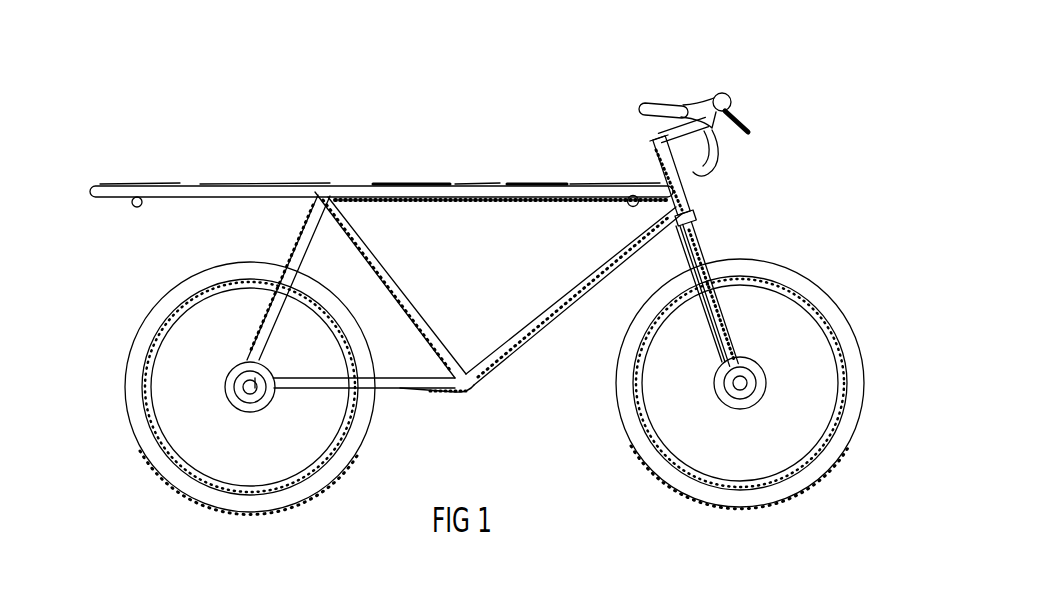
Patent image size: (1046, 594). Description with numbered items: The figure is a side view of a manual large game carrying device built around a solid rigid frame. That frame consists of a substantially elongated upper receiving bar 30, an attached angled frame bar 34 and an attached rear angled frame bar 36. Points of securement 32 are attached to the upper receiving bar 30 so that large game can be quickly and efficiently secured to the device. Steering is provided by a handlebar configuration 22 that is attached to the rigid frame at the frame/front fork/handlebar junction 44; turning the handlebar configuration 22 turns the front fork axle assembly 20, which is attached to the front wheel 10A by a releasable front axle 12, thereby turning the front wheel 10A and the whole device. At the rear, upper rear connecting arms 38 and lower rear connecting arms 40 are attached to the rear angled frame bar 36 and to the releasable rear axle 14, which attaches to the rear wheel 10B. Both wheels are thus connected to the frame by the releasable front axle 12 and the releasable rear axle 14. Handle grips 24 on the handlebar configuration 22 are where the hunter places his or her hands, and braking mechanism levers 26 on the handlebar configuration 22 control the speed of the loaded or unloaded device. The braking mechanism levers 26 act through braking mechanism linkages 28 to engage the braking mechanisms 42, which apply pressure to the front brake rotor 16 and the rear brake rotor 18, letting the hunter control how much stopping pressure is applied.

The front wheel 10A is at (866, 372).
The rear wheel 10B is at (125, 383).
The releasable front axle 12 is at (742, 384).
The releasable rear axle 14 is at (243, 387).
The front brake rotor 16 is at (757, 397).
The rear brake rotor 18 is at (237, 400).
The front fork axle assembly 20 is at (707, 247).
The handlebar configuration 22 is at (676, 131).
The handle grips 24 is at (712, 95).
The braking mechanism levers 26 is at (740, 118).
The braking mechanism linkages 28 is at (405, 186).
The substantially elongated upper receiving bar 30 is at (270, 186).
The points of securement 32 is at (137, 206).
The angled frame bar 34 is at (560, 316).
The rear angled frame bar 36 is at (435, 338).
The upper rear connecting arms 38 is at (293, 260).
The lower rear connecting arms 40 is at (393, 397).
The braking mechanisms 42 is at (243, 372).
The frame/front fork/handlebar junction 44 is at (683, 197).